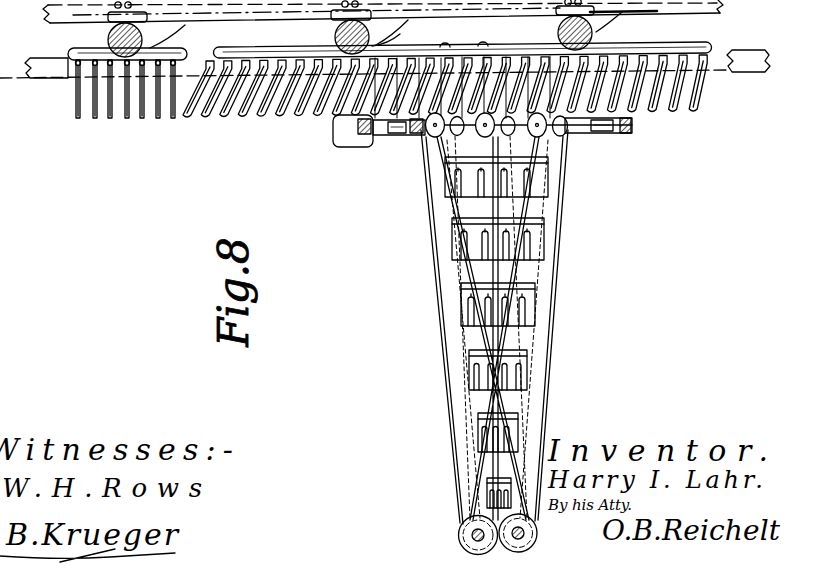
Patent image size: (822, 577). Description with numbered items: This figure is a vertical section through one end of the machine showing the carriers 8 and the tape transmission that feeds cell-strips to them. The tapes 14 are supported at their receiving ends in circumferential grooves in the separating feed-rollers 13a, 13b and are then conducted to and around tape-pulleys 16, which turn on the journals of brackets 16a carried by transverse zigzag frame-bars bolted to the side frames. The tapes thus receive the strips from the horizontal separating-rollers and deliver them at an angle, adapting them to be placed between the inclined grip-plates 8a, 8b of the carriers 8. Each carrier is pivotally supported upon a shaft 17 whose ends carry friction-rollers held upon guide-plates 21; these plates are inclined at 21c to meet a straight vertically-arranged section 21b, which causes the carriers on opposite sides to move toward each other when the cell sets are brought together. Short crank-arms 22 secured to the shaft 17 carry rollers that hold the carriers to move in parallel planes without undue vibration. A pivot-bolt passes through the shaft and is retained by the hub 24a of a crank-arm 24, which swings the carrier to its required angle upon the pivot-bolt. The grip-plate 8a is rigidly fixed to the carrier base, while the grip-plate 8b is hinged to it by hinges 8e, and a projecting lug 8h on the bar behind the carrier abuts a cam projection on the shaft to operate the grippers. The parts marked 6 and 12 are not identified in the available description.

The comb plates 6 is at (464, 312).
The carrier 8 is at (385, 92).
The grip-plate 8a is at (125, 116).
The hinged grip-plate 8b is at (670, 110).
The hinge 8e is at (166, 84).
The projecting lug 8h is at (73, 47).
The link 12 is at (386, 42).
The separating feed-roller 13a is at (458, 537).
The separating feed-roller 13b is at (536, 526).
The tape 14 is at (552, 268).
The tape-pulley 16 is at (442, 144).
The bracket 16a is at (421, 139).
The shaft 17 is at (334, 40).
The guide-plate 21 is at (38, 72).
The straight vertically-arranged section 21b is at (70, 27).
The inclined portion of guide-plate 21c is at (427, 18).
The crank-arm 22 is at (655, 14).
The crank-arm 24 is at (105, 46).
The hub 24a is at (464, 35).